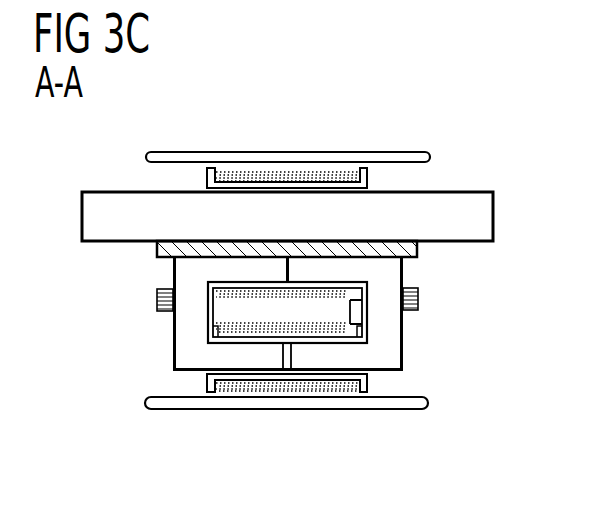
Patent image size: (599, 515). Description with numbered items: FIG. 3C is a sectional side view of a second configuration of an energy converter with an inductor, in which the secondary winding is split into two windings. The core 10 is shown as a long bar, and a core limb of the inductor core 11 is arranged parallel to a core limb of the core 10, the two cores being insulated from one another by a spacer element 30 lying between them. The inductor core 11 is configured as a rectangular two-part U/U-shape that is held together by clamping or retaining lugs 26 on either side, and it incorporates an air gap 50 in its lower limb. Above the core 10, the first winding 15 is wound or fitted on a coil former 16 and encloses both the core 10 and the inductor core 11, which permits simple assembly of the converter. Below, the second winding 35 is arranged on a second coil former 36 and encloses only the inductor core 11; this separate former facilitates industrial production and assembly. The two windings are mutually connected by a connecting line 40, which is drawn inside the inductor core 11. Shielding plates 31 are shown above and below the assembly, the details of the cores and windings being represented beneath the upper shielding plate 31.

The core 10 is at (118, 200).
The inductor core 11 is at (182, 342).
The first winding 15 is at (335, 170).
The coil former 16 is at (369, 180).
The clamping or retaining lugs 26 is at (158, 297).
The spacer element 30 is at (419, 244).
The shielding plate 31 is at (215, 160).
The second winding 35 is at (352, 388).
The second coil former 36 is at (371, 383).
The connecting line 40 is at (368, 307).
The air gap 50 is at (287, 355).